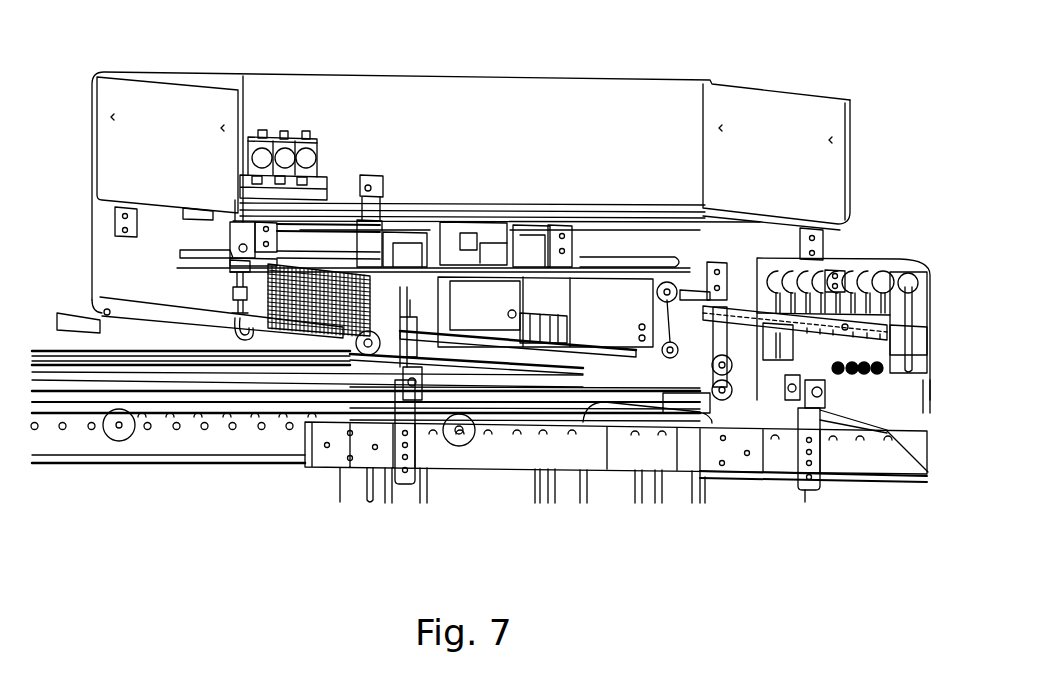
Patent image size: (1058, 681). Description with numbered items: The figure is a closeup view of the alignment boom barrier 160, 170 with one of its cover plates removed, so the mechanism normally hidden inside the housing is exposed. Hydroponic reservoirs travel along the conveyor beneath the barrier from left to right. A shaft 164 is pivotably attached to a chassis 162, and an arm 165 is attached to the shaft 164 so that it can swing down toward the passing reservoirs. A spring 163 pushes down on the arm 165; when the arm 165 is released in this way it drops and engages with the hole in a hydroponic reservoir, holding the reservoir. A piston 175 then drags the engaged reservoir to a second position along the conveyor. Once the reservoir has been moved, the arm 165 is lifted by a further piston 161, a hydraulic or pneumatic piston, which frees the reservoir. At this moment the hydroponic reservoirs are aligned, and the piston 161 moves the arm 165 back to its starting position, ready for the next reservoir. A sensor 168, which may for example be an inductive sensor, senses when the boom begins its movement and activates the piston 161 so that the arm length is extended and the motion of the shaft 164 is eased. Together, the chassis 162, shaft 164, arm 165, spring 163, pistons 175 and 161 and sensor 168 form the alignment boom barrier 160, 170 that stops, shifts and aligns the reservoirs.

The alignment boom barrier 160 is at (705, 118).
The alignment boom barrier 170 is at (705, 118).
The piston 161 is at (371, 225).
The chassis 162 is at (107, 247).
The spring 163 is at (263, 247).
The shaft 164 is at (550, 322).
The arm 165 is at (467, 337).
The sensor 168 is at (762, 233).
The piston 175 is at (485, 242).